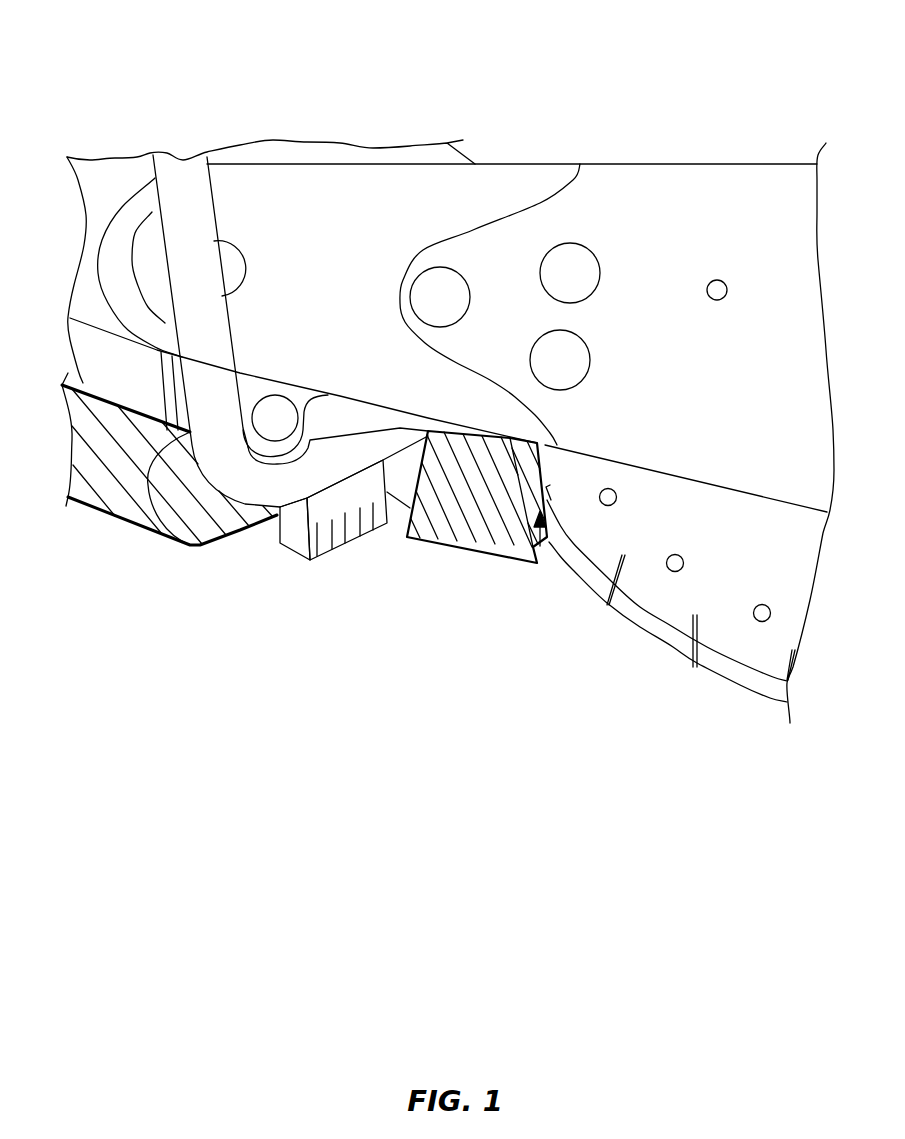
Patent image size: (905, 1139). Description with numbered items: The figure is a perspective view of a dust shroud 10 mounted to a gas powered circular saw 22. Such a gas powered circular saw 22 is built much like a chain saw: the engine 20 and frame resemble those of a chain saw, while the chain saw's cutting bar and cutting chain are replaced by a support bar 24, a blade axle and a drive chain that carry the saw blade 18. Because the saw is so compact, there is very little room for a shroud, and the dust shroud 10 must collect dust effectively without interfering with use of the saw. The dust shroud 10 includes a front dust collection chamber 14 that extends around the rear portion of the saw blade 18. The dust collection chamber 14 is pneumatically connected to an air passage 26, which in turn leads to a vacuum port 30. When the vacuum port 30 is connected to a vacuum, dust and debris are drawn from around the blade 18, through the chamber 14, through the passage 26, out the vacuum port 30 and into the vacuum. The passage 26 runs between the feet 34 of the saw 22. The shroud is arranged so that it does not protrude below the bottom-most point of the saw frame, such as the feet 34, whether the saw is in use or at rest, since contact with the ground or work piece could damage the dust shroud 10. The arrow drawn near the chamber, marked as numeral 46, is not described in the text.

The dust shroud 10 is at (385, 714).
The front dust collection chamber 14 is at (480, 533).
The saw blade 18 is at (640, 580).
The engine 20 is at (93, 173).
The gas powered circular saw 22 is at (305, 278).
The support bar 24 is at (398, 192).
The air passage 26 is at (400, 477).
The vacuum port 30 is at (130, 505).
The feet 34 is at (293, 527).
The direction arrow 46 is at (537, 563).